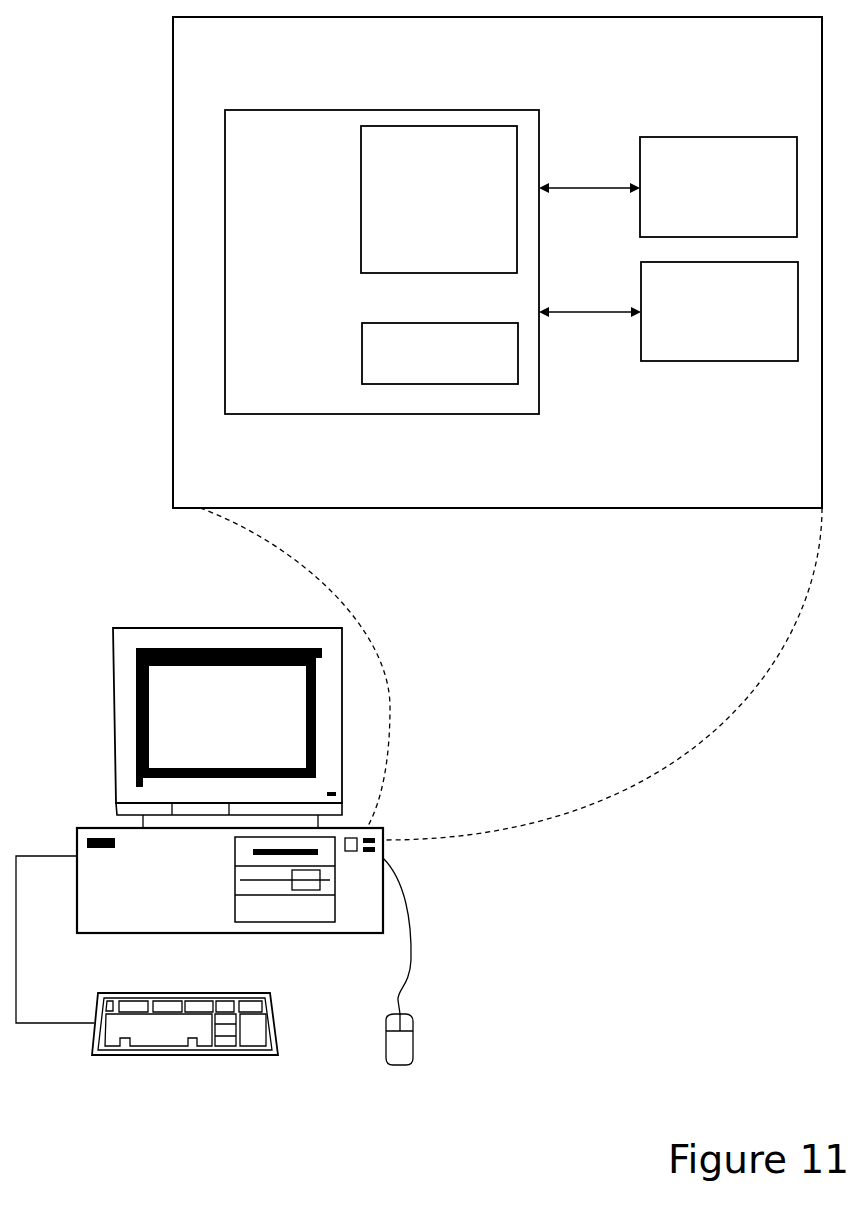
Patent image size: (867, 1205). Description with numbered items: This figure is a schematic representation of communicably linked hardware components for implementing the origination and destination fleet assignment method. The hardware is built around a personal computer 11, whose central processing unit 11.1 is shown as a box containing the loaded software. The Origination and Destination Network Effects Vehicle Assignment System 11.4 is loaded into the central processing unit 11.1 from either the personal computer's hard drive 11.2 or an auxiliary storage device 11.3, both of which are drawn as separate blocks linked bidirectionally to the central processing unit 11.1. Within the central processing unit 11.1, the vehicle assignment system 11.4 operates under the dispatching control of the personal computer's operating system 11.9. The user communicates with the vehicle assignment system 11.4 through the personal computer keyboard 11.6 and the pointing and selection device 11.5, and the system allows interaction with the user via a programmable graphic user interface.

The personal computer 11 is at (134, 620).
The central processing unit 11.1 is at (300, 134).
The hard drive 11.2 is at (675, 130).
The auxiliary storage device 11.3 is at (693, 368).
The Origination and Destination Network Effects Vehicle Assignment System 11.4 is at (383, 284).
The pointing and selection device 11.5 is at (397, 1083).
The personal computer keyboard 11.6 is at (123, 1072).
The operating system 11.9 is at (402, 392).